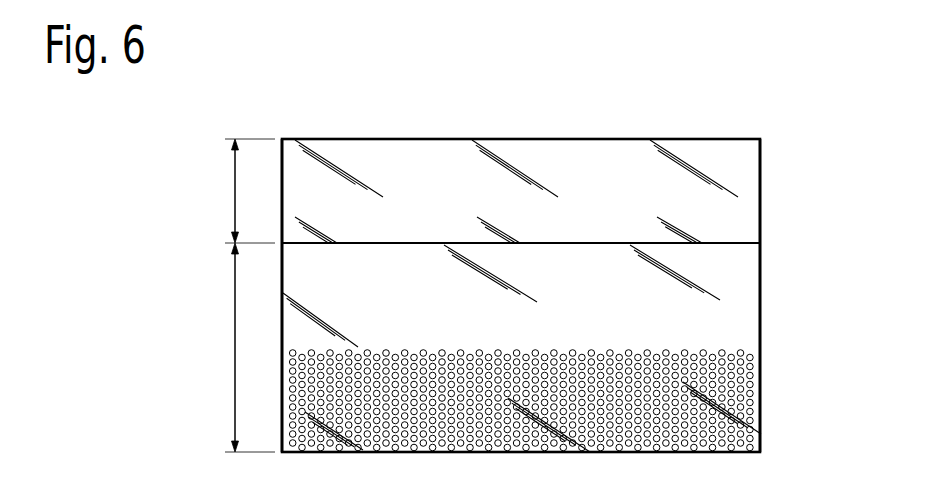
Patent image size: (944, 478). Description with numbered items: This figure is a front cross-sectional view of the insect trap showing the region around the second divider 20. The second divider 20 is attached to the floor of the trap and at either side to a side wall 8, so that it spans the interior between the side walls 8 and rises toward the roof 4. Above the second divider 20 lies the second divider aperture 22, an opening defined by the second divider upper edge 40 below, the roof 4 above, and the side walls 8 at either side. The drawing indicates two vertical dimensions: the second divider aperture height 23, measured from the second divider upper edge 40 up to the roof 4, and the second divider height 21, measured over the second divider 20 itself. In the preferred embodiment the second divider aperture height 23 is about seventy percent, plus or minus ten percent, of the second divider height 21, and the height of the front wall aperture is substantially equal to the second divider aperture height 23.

The roof 4 is at (572, 139).
The side walls 8 is at (283, 167).
The second divider aperture 22 is at (743, 171).
The second divider 20 is at (735, 338).
The second divider upper edge 40 is at (400, 243).
The second divider aperture height 23 is at (235, 197).
The second divider height 21 is at (235, 382).